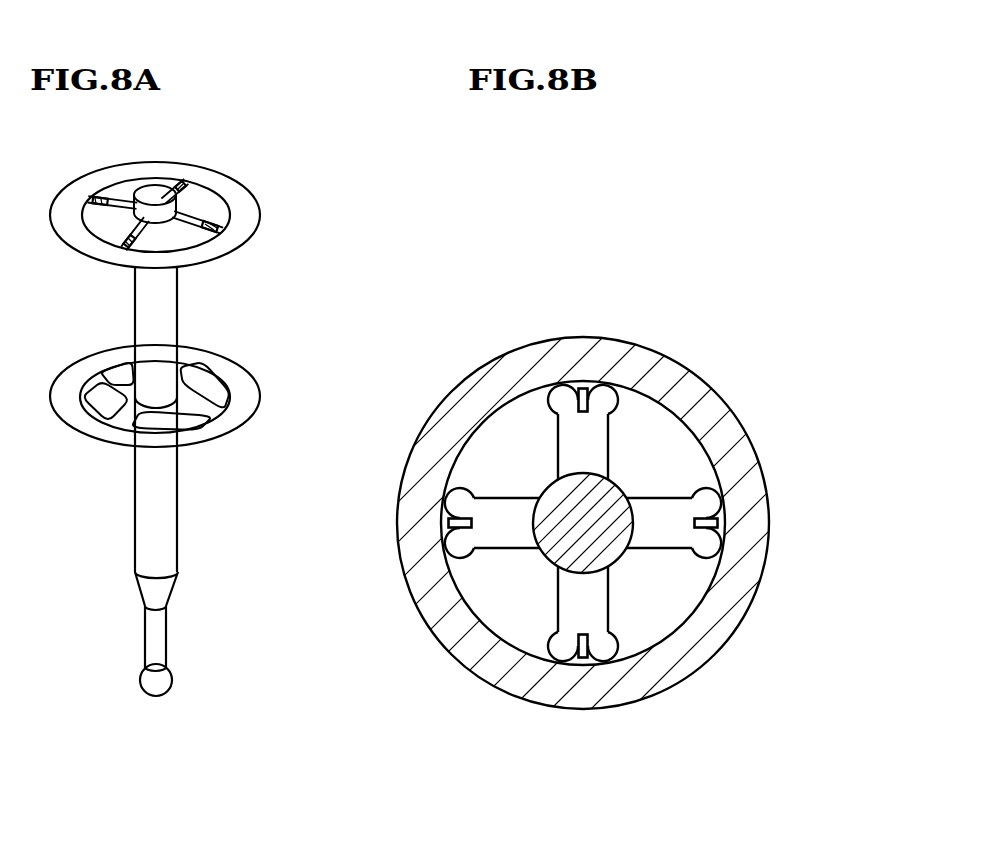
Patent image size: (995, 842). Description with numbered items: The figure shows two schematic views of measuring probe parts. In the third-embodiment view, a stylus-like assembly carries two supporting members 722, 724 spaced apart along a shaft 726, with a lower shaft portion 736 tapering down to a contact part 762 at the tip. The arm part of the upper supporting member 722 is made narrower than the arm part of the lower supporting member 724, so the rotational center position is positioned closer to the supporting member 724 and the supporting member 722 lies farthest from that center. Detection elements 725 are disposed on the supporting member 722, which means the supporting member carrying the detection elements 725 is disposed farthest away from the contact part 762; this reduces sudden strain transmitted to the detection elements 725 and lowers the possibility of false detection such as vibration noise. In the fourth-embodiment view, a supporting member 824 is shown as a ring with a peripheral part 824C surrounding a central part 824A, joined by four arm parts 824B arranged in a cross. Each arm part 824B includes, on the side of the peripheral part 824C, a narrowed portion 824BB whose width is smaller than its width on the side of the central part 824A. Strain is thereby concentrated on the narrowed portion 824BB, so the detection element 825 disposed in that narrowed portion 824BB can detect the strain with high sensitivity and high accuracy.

In FIG. 8A, the supporting member 722 is at (184, 185).
In FIG. 8A, the detection elements 725 is at (156, 215).
In FIG. 8A, the shaft 726 is at (156, 419).
In FIG. 8A, the supporting member 724 is at (221, 368).
In FIG. 8A, the lower shaft portion 736 is at (206, 525).
In FIG. 8A, the contact part 762 is at (163, 682).
In FIG. 8B, the supporting member 824 is at (808, 407).
In FIG. 8B, the peripheral part 824C is at (698, 402).
In FIG. 8B, the central part 824A is at (612, 498).
In FIG. 8B, the arm part 824B is at (630, 499).
In FIG. 8B, the narrowed portion 824BB is at (722, 517).
In FIG. 8B, the detection element 825 is at (586, 388).